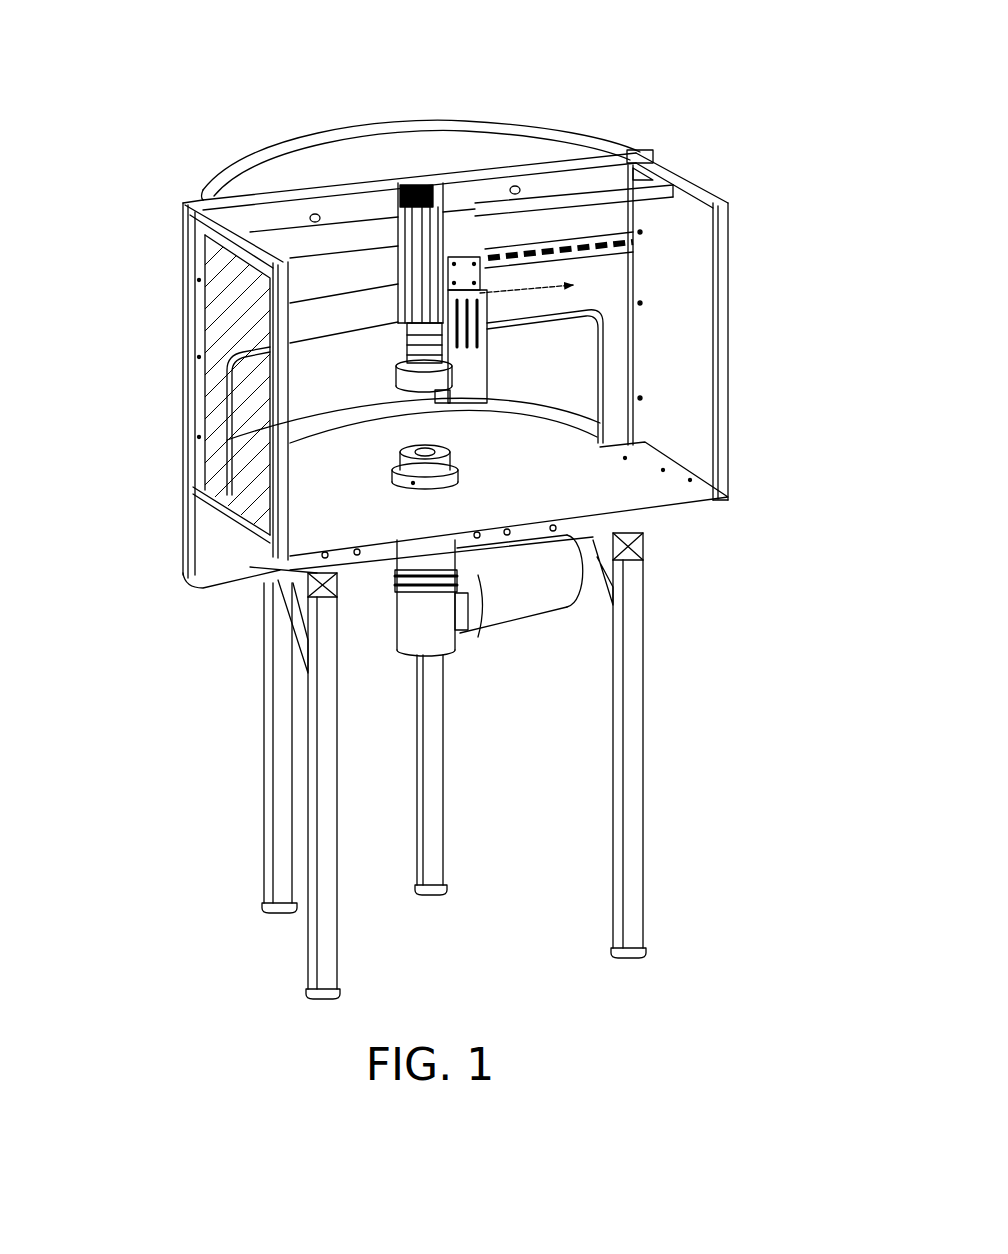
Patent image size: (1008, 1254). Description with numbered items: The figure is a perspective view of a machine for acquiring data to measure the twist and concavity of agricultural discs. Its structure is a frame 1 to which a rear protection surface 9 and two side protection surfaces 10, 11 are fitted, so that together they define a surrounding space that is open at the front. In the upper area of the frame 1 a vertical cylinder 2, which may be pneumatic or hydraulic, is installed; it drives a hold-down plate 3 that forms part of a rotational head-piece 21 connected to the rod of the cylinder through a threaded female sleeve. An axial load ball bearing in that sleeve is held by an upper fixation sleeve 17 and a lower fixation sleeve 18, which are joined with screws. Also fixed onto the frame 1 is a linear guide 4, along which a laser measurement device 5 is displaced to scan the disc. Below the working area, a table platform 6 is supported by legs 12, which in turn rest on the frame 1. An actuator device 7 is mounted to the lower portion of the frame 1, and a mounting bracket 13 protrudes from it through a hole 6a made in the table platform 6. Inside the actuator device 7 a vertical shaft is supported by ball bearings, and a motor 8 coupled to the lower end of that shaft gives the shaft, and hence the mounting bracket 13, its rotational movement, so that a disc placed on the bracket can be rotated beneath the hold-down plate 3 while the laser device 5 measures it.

The frame 1 is at (352, 174).
The vertical cylinder 2 is at (398, 272).
The hold-down plate 3 is at (413, 389).
The linear guide 4 is at (600, 262).
The laser measurement device 5 is at (492, 382).
The table platform 6 is at (660, 495).
The hole 6a is at (455, 486).
The actuator device 7 is at (392, 592).
The motor 8 is at (500, 600).
The rear protection surface 9 is at (302, 173).
The side protection surface 10 is at (265, 291).
The side protection surface 11 is at (683, 413).
The legs 12 is at (283, 897).
The mounting bracket 13 is at (437, 466).
The upper fixation sleeve 17 is at (420, 334).
The lower fixation sleeve 18 is at (423, 350).
The rotational head-piece 21 is at (423, 361).